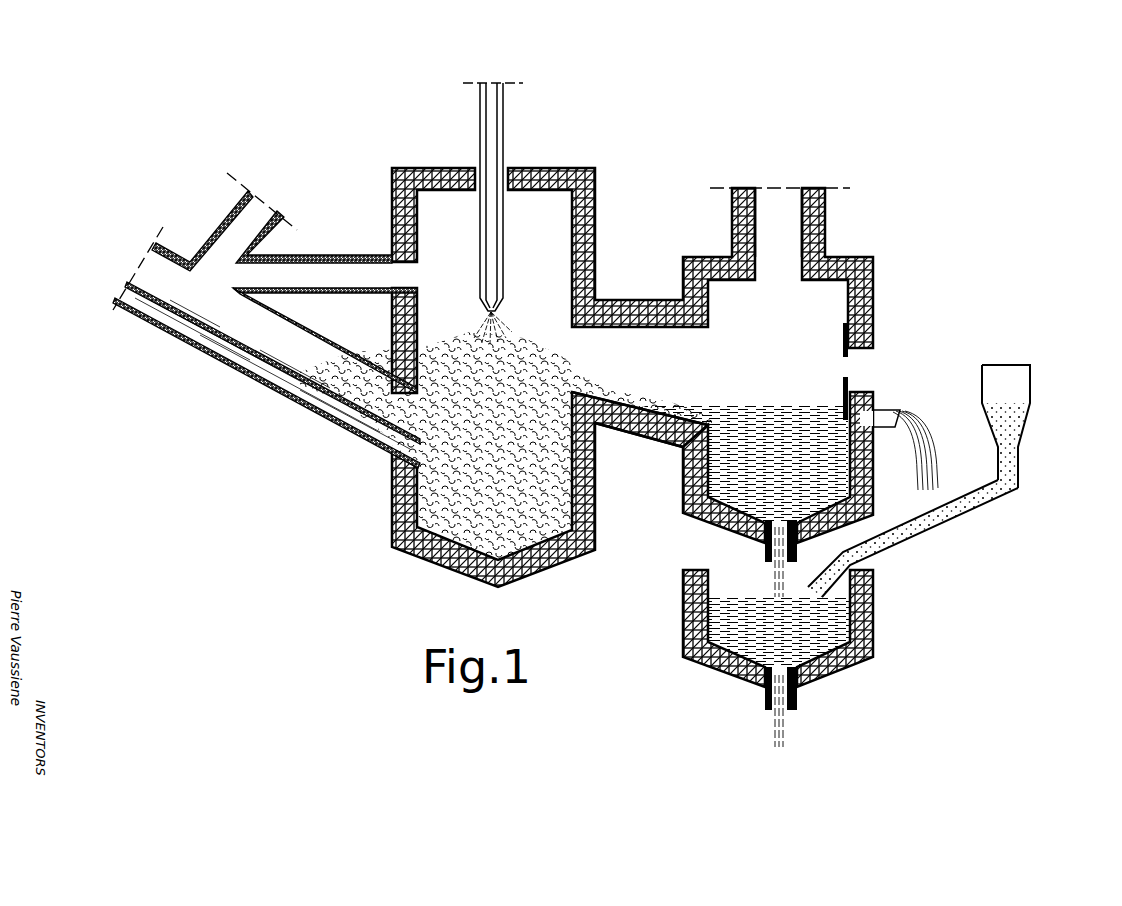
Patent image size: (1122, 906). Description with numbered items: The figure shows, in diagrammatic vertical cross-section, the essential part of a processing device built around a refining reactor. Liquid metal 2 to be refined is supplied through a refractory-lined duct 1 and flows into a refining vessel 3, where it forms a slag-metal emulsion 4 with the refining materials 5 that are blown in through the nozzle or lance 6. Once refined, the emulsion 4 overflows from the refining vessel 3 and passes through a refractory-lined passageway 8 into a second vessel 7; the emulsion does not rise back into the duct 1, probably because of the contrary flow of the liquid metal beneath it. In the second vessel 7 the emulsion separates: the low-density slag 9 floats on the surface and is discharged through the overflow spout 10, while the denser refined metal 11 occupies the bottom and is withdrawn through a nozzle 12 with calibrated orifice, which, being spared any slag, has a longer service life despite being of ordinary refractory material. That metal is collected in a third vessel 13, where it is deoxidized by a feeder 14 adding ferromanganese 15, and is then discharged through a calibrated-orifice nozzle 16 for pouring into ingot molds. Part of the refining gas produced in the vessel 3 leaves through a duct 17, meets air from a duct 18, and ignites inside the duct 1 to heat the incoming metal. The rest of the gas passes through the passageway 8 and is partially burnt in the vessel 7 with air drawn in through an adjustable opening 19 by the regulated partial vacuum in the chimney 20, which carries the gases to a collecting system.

The refractory-lined duct 1 is at (282, 350).
The liquid metal 2 is at (220, 350).
The refining vessel 3 is at (553, 280).
The slag-metal emulsion 4 is at (394, 503).
The refining materials 5 is at (477, 328).
The nozzle or lance 6 is at (490, 140).
The second vessel 7 is at (827, 330).
The refractory-lined passageway 8 is at (613, 357).
The slag 9 is at (785, 410).
The overflow spout 10 is at (898, 412).
The refined metal 11 is at (700, 523).
The nozzle with calibrated orifice 12 is at (760, 557).
The third vessel 13 is at (720, 585).
The feeder 14 is at (1012, 402).
The ferromanganese 15 is at (1018, 447).
The calibrated-orifice nozzle 16 is at (765, 700).
The duct 17 is at (340, 273).
The duct 18 is at (217, 240).
The adjustable opening 19 is at (843, 367).
The chimney 20 is at (776, 203).